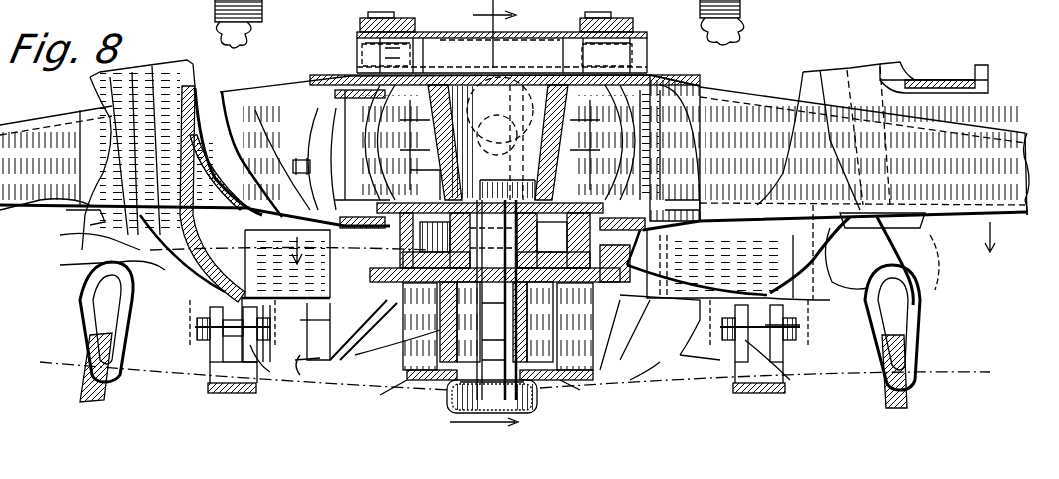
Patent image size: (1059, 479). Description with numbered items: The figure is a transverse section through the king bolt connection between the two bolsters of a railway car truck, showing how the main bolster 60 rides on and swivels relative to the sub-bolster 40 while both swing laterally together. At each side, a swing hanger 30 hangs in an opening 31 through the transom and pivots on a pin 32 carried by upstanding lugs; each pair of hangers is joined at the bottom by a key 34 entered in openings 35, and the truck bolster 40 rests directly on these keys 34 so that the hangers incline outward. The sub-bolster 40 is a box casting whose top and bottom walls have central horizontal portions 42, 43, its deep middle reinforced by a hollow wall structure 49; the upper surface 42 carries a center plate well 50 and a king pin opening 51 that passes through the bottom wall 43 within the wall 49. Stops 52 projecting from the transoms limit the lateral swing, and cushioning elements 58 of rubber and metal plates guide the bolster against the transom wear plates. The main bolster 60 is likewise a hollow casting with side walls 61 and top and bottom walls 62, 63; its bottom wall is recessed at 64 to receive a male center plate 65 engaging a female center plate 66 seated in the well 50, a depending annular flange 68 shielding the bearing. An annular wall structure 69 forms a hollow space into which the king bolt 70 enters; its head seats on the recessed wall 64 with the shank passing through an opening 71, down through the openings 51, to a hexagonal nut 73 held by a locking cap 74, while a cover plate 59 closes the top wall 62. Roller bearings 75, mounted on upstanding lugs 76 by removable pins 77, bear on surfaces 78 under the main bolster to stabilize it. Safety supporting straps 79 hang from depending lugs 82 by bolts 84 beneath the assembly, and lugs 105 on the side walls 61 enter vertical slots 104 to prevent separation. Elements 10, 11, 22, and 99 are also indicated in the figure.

The section line 10 is at (484, 213).
The section line 11 is at (1000, 230).
The hook bracket 22 is at (872, 183).
The swing hanger 30 is at (102, 143).
The opening 31 is at (190, 82).
The pin 32 is at (215, 6).
The key 34 is at (82, 388).
The opening 35 is at (90, 290).
The truck bolster 40 is at (585, 382).
The central horizontal portion of top wall 42 is at (632, 300).
The central horizontal portion of bottom wall 43 is at (425, 382).
The hollow wall structure 49 is at (440, 330).
The center plate well 50 is at (398, 295).
The king pin opening 51 is at (500, 290).
The stop 52 is at (690, 370).
The cushioning element 58 is at (300, 376).
The cover plate 59 is at (520, 74).
The main bolster 60 is at (290, 82).
The side wall 61 is at (279, 154).
The top wall 62 is at (655, 78).
The bottom wall 63 is at (660, 210).
The recess 64 is at (412, 198).
The male center plate 65 is at (640, 185).
The female center plate 66 is at (402, 333).
The depending annular flange 68 is at (352, 176).
The annular wall structure 69 is at (463, 74).
The king bolt 70 is at (453, 310).
The opening 71 is at (498, 138).
The hexagonal nut 73 is at (537, 390).
The locking cap 74 is at (537, 405).
The roller bearing 75 is at (75, 223).
The upstanding lug 76 is at (70, 266).
The removable pin 77 is at (75, 240).
The bearing surface 78 is at (80, 188).
The safety supporting strap 79 is at (222, 390).
The depending lug 82 is at (215, 355).
The bolt 84 is at (268, 375).
The bushing 99 is at (580, 293).
The vertical slot 104 is at (430, 118).
The lug 105 is at (590, 113).